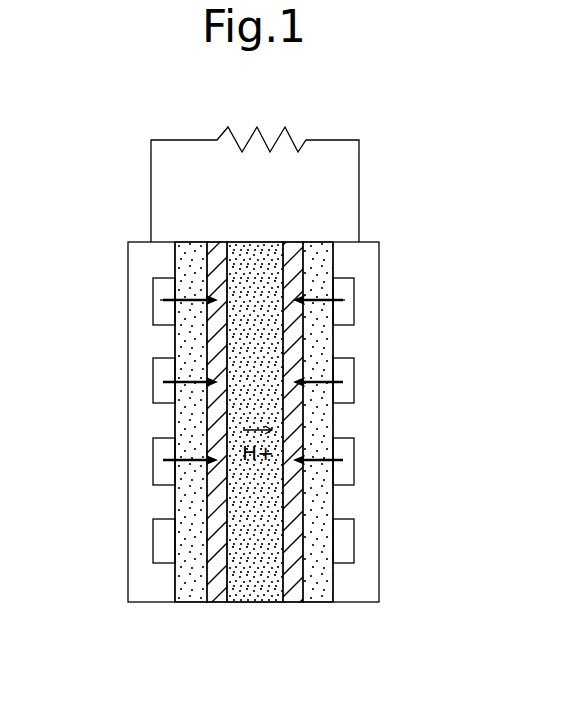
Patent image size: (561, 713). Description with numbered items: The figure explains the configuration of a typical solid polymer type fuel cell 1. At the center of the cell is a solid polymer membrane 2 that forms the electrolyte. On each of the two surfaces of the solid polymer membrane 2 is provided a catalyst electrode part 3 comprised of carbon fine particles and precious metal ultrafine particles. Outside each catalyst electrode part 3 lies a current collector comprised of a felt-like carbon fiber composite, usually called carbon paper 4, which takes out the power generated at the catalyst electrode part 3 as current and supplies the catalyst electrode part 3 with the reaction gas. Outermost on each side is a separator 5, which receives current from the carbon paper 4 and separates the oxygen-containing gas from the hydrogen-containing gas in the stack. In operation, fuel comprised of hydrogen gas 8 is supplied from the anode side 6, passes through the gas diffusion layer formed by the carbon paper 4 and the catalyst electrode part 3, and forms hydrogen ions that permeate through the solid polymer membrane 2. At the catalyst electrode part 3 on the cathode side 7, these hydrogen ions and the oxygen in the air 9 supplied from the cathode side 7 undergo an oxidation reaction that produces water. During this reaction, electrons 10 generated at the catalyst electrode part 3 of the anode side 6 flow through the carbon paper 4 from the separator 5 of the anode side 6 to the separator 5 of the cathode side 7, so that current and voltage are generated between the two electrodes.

The solid polymer type fuel cell 1 is at (110, 207).
The solid polymer membrane 2 is at (250, 247).
The catalyst electrode part 3 is at (297, 587).
The carbon paper 4 is at (195, 583).
The separator 5 is at (143, 568).
The anode side 6 is at (107, 418).
The cathode side 7 is at (383, 418).
The hydrogen gas 8 is at (167, 292).
The air 9 is at (342, 293).
The electrons 10 is at (290, 122).